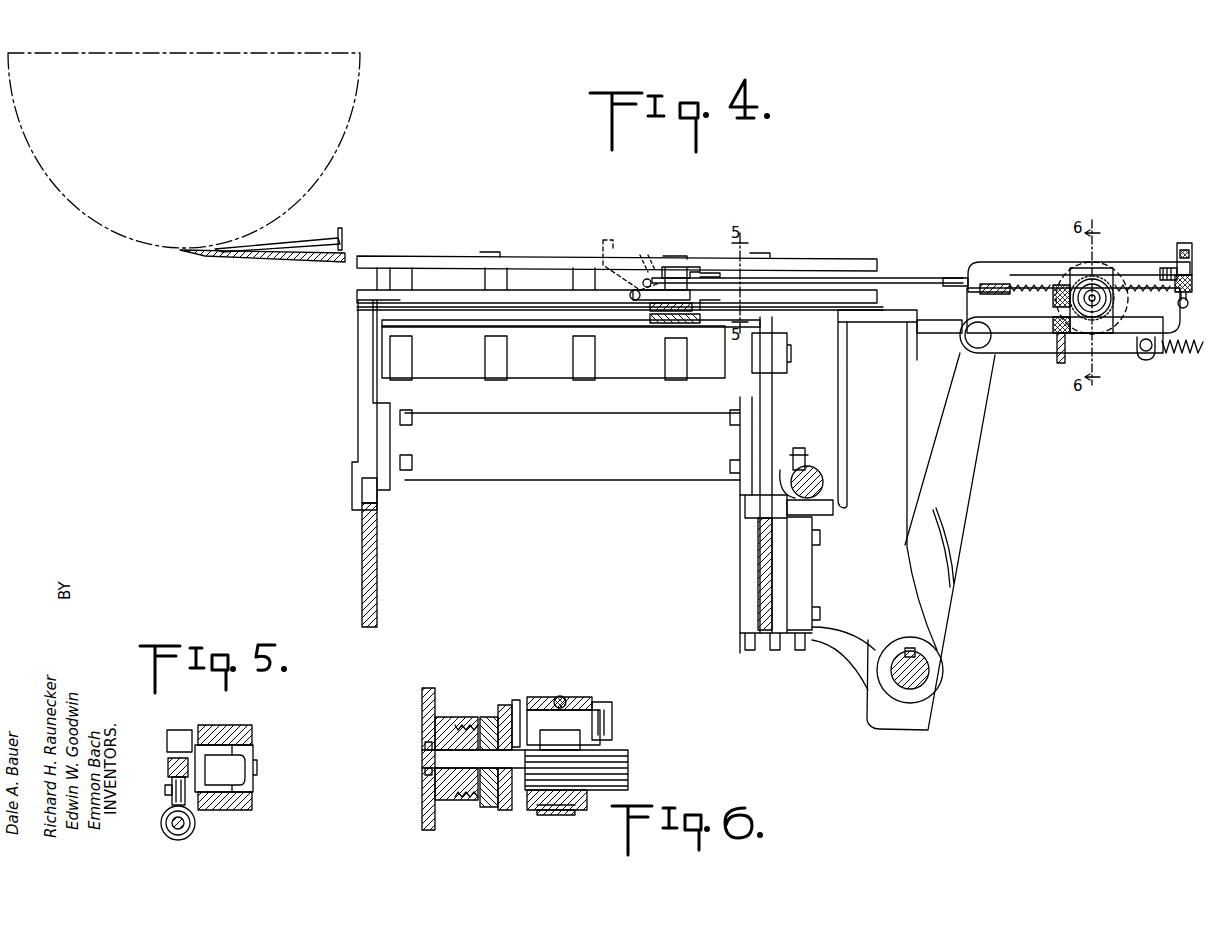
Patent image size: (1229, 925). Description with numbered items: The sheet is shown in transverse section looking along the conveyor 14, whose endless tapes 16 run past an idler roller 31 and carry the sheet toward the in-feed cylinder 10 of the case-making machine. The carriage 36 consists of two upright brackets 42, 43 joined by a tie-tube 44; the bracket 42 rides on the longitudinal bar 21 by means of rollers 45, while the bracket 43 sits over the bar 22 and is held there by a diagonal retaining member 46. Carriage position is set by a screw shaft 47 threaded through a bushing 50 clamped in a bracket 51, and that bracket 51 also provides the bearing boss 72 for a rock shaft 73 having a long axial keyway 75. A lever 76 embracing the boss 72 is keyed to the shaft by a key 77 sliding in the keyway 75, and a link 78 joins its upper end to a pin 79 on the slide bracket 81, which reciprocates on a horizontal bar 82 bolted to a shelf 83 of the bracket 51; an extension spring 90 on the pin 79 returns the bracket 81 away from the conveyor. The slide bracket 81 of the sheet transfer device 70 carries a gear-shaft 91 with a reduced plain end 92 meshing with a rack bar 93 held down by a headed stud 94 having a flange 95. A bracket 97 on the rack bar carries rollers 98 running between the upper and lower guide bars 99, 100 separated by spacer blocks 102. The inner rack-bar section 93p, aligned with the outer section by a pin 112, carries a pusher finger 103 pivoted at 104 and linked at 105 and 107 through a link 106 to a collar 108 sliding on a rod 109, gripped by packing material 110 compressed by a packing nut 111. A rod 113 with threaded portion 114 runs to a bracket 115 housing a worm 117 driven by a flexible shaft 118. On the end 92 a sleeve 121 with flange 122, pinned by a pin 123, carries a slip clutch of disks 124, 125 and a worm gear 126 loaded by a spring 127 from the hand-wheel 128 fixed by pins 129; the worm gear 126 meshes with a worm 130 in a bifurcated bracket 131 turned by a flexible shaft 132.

In FIG. 4, the in-feed cylinder 10 is at (343, 88).
In FIG. 4, the conveyor 14 is at (611, 385).
In FIG. 4, the endless tapes 16 is at (475, 349).
In FIG. 4, the longitudinally extending bar 21 is at (362, 547).
In FIG. 4, the longitudinally extending bar 22 is at (760, 557).
In FIG. 4, the idler roller 31 is at (532, 376).
In FIG. 4, the carriage 36 is at (530, 486).
In FIG. 4, the bracket 42 is at (365, 431).
In FIG. 4, the bracket 43 is at (772, 418).
In FIG. 4, the tie-tube 44 is at (585, 482).
In FIG. 4, the rollers 45 is at (375, 503).
In FIG. 4, the retaining member 46 is at (748, 588).
In FIG. 4, the screw shaft 47 is at (825, 481).
In FIG. 4, the internally threaded bushing 50 is at (810, 470).
In FIG. 4, the bracket 51 is at (846, 630).
In FIG. 4, the sheet transfer device 70 is at (857, 250).
In FIG. 4, the bearing boss 72 is at (944, 680).
In FIG. 4, the rock shaft 73 is at (930, 668).
In FIG. 4, the axial keyway 75 is at (897, 655).
In FIG. 4, the lever 76 is at (960, 477).
In FIG. 4, the key 77 is at (918, 653).
In FIG. 4, the link 78 is at (1008, 354).
In FIG. 4, the pin 79 is at (1143, 360).
In FIG. 4, the slide bracket 81 is at (1161, 345).
In FIG. 6, the slide bracket 81 is at (590, 790).
In FIG. 4, the horizontal bar 82 is at (937, 321).
In FIG. 6, the horizontal bar 82 is at (560, 815).
In FIG. 4, the shelf 83 is at (880, 322).
In FIG. 4, the extension coil spring 90 is at (1178, 354).
In FIG. 6, the gear-shaft 91 is at (625, 750).
In FIG. 4, the plain end of reduced diameter 92 is at (1100, 303).
In FIG. 6, the plain end of reduced diameter 92 is at (425, 758).
In FIG. 4, the rack bar 93 is at (1130, 278).
In FIG. 6, the rack bar 93 is at (565, 730).
In FIG. 4, the inner rack-bar section 93p is at (920, 278).
In FIG. 5, the inner rack-bar section 93p is at (168, 764).
In FIG. 6, the headed stud 94 is at (612, 712).
In FIG. 6, the external flange 95 is at (518, 700).
In FIG. 4, the bracket 97 is at (712, 272).
In FIG. 5, the bracket 97 is at (220, 795).
In FIG. 4, the anti-friction-bearing rollers 98 is at (690, 266).
In FIG. 5, the anti-friction-bearing rollers 98 is at (206, 745).
In FIG. 4, the upper guide bar 99 is at (544, 258).
In FIG. 5, the upper guide bar 99 is at (240, 726).
In FIG. 4, the lower guide bar 100 is at (524, 299).
In FIG. 5, the lower guide bar 100 is at (250, 805).
In FIG. 4, the spacer blocks 102 is at (367, 278).
In FIG. 4, the sheet engaging pusher finger 103 is at (605, 240).
In FIG. 5, the sheet engaging pusher finger 103 is at (178, 730).
In FIG. 4, the pivotal connection 104 is at (645, 268).
In FIG. 4, the pivotal connection 105 is at (627, 308).
In FIG. 4, the link 106 is at (646, 319).
In FIG. 5, the link 106 is at (168, 795).
In FIG. 4, the pivotal connection 107 is at (705, 312).
In FIG. 5, the pivotal connection 107 is at (172, 788).
In FIG. 4, the collar or hub 108 is at (652, 322).
In FIG. 5, the collar or hub 108 is at (192, 834).
In FIG. 4, the rod 109 is at (550, 312).
In FIG. 5, the rod 109 is at (172, 823).
In FIG. 4, the packing material 110 is at (665, 322).
In FIG. 4, the packing nut 111 is at (703, 336).
In FIG. 5, the packing nut 111 is at (168, 836).
In FIG. 4, the pin 112 is at (982, 294).
In FIG. 4, the rod 113 is at (978, 262).
In FIG. 6, the rod 113 is at (560, 697).
In FIG. 4, the externally threaded portion 114 is at (1165, 268).
In FIG. 4, the bracket 115 is at (1178, 247).
In FIG. 4, the worm 117 is at (1190, 256).
In FIG. 4, the flexible shaft 118 is at (1183, 308).
In FIG. 4, the sleeve 121 is at (1088, 312).
In FIG. 6, the sleeve 121 is at (445, 805).
In FIG. 6, the flange 122 is at (517, 800).
In FIG. 6, the pin 123 is at (486, 752).
In FIG. 6, the metallic disk 124 is at (506, 705).
In FIG. 6, the metallic disk 125 is at (482, 810).
In FIG. 4, the worm gear 126 is at (1108, 272).
In FIG. 6, the worm gear 126 is at (496, 706).
In FIG. 4, the coil compression spring 127 is at (1093, 340).
In FIG. 6, the coil compression spring 127 is at (464, 724).
In FIG. 4, the hand-wheel 128 is at (1073, 258).
In FIG. 6, the hand-wheel 128 is at (422, 703).
In FIG. 6, the screws or pins 129 is at (425, 746).
In FIG. 4, the worm 130 is at (1053, 297).
In FIG. 4, the bifurcated bracket 131 is at (1053, 326).
In FIG. 4, the flexible shaft 132 is at (1060, 364).